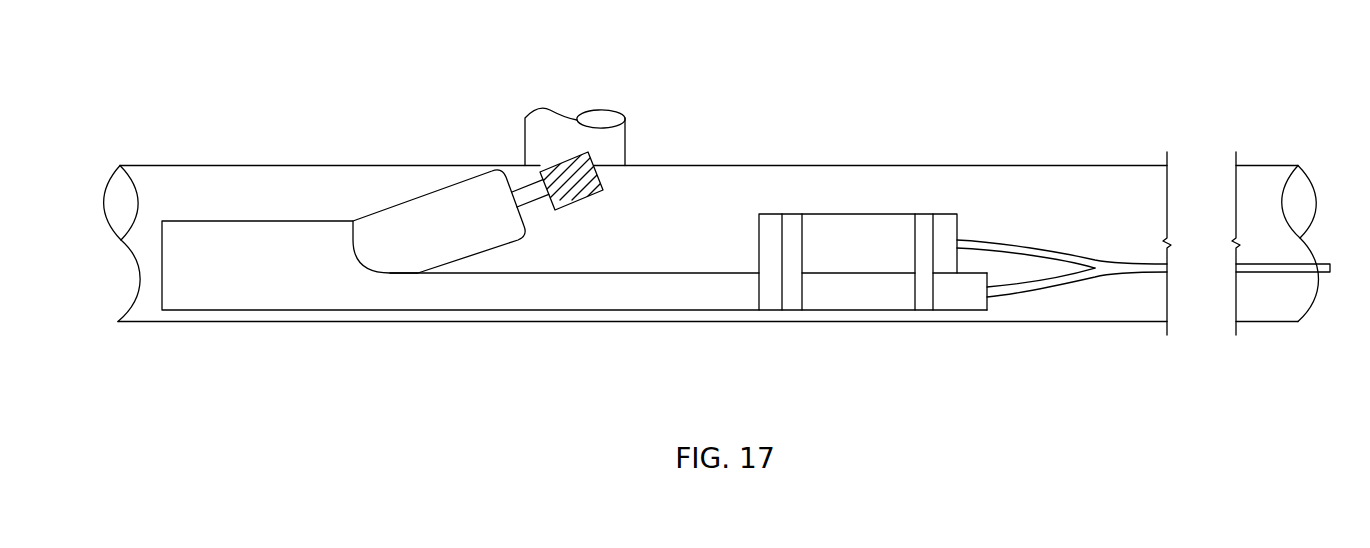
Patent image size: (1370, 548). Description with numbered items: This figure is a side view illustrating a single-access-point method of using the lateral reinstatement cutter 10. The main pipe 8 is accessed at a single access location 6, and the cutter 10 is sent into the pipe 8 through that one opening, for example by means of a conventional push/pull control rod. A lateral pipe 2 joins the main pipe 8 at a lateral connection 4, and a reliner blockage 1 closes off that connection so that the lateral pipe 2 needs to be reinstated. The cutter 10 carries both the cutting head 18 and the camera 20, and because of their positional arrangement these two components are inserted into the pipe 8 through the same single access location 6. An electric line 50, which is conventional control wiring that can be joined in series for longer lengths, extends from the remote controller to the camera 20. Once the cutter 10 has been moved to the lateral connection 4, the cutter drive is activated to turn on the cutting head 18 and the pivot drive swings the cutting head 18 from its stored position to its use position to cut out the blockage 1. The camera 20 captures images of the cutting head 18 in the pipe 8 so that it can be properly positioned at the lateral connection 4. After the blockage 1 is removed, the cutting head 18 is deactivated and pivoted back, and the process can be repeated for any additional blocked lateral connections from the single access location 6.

The blockage 1 is at (537, 165).
The lateral pipe 2 is at (543, 83).
The lateral connection 4 is at (597, 136).
The single access location 6 is at (1312, 150).
The pipe 8 is at (1113, 313).
The lateral reinstatement cutter 10 is at (939, 174).
The cutting head 18 is at (595, 215).
The camera 20 is at (866, 195).
The electric line 50 is at (1066, 216).